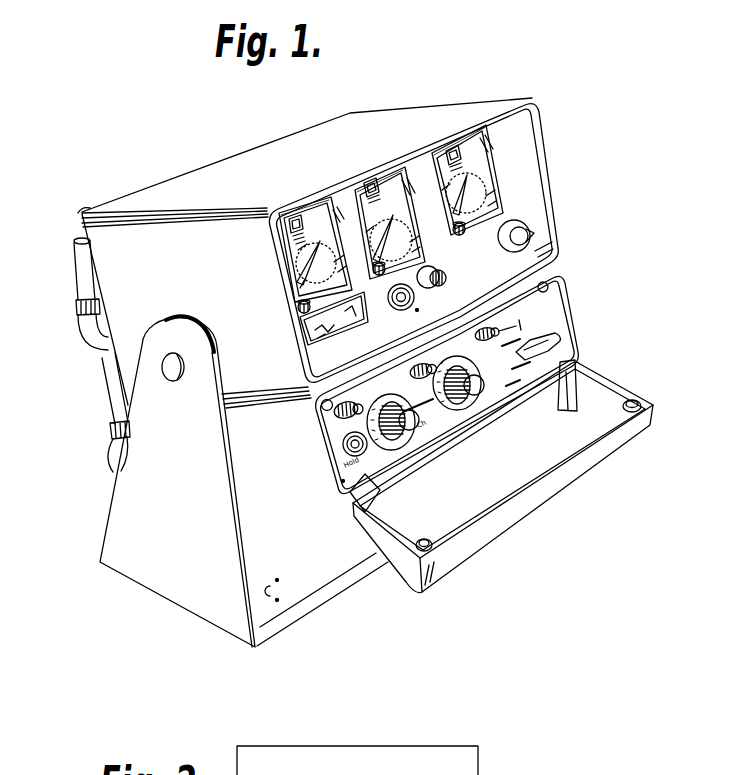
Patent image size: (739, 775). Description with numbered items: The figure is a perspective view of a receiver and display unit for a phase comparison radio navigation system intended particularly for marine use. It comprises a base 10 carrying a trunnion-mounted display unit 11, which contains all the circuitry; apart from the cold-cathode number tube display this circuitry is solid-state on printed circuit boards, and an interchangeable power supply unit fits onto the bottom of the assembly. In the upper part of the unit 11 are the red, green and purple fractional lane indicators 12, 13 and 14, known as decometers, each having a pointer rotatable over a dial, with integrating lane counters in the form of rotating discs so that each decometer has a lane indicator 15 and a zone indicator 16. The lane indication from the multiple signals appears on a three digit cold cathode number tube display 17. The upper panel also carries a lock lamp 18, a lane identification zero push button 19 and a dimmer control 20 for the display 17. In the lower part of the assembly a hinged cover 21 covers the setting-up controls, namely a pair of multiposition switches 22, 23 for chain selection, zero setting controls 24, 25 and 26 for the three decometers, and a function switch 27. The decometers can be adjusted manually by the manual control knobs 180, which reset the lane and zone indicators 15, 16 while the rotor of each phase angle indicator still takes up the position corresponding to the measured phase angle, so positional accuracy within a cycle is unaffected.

The base 10 is at (125, 505).
The display unit 11 is at (450, 103).
The red fractional lane indicator 12 is at (307, 256).
The green fractional lane indicator 13 is at (395, 172).
The purple fractional lane indicator 14 is at (480, 167).
The lane indicator 15 is at (292, 226).
The zone indicator 16 is at (296, 220).
The three digit cold cathode number tube display 17 is at (300, 352).
The lock lamp 18 is at (535, 235).
The lane identification zero push button 19 is at (395, 305).
The dimmer control 20 is at (448, 273).
The hinged cover 21 is at (582, 477).
The multiposition switch 22 is at (400, 433).
The multiposition switch 23 is at (469, 398).
The zero setting control 24 is at (350, 416).
The zero setting control 25 is at (423, 378).
The zero setting control 26 is at (515, 323).
The function switch 27 is at (556, 338).
The manual control knob 180 is at (297, 310).